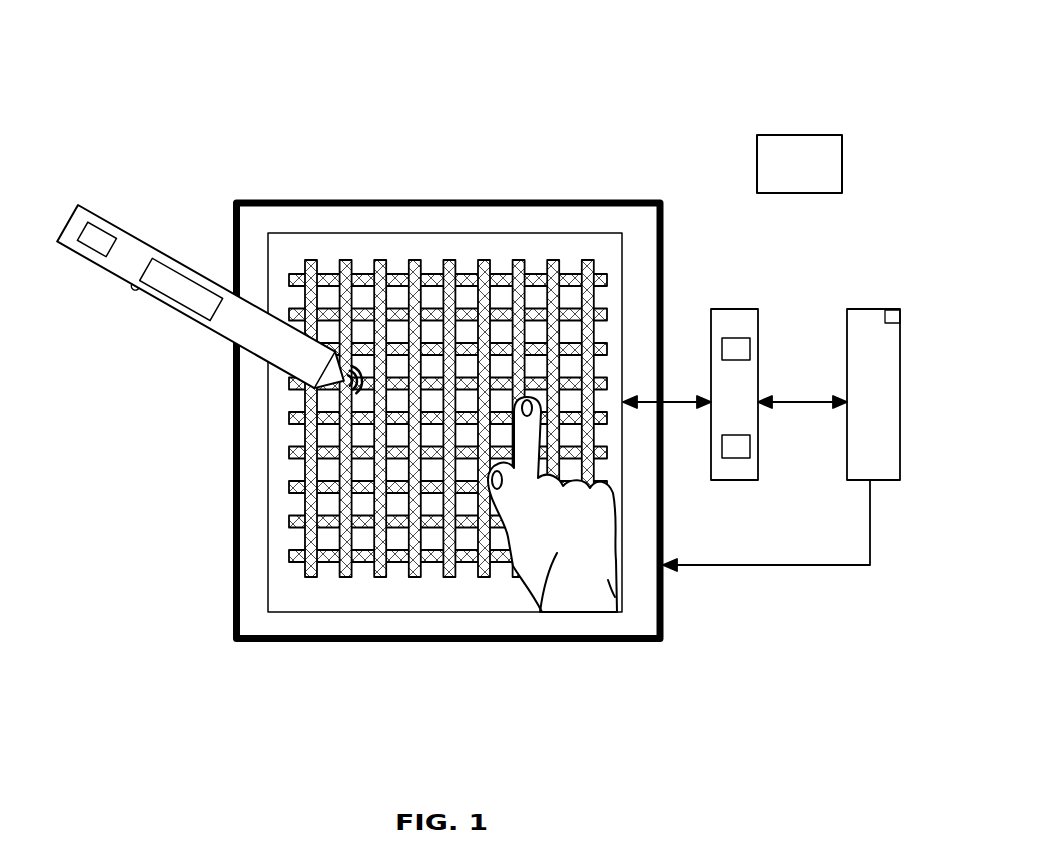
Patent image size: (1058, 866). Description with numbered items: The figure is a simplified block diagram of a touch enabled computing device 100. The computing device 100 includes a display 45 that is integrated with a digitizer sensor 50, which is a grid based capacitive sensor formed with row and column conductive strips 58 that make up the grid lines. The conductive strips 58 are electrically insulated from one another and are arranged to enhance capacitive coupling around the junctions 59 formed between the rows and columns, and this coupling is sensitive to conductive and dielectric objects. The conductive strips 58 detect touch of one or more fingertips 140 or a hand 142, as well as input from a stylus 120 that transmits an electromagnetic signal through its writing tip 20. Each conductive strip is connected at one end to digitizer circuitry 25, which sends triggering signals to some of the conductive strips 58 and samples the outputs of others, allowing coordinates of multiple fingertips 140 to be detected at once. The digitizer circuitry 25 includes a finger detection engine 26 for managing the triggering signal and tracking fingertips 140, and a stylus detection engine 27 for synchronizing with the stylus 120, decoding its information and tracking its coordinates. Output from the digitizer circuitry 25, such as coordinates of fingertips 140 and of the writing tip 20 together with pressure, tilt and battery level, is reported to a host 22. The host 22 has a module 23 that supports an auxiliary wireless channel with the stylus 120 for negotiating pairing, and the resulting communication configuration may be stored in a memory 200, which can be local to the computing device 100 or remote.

The computing device 100 is at (443, 106).
The stylus 120 is at (199, 299).
The writing tip 20 is at (337, 381).
The display 45 is at (580, 203).
The digitizer sensor 50 is at (623, 287).
The conductive strips 58 is at (374, 412).
The junctions 59 is at (410, 522).
The fingertip 140 is at (524, 412).
The hand 142 is at (530, 569).
The memory 200 is at (843, 150).
The digitizer circuitry 25 is at (765, 352).
The finger detection engine 26 is at (750, 348).
The stylus detection engine 27 is at (748, 448).
The host 22 is at (903, 356).
The module 23 is at (892, 324).